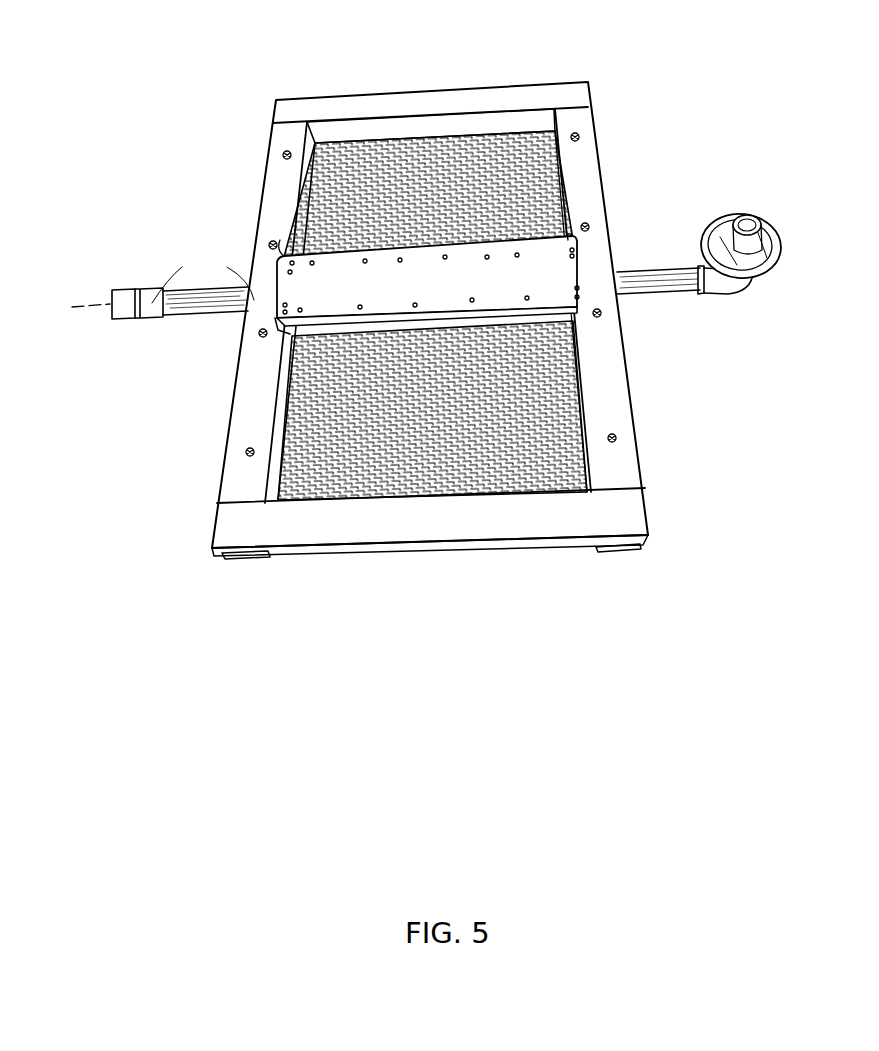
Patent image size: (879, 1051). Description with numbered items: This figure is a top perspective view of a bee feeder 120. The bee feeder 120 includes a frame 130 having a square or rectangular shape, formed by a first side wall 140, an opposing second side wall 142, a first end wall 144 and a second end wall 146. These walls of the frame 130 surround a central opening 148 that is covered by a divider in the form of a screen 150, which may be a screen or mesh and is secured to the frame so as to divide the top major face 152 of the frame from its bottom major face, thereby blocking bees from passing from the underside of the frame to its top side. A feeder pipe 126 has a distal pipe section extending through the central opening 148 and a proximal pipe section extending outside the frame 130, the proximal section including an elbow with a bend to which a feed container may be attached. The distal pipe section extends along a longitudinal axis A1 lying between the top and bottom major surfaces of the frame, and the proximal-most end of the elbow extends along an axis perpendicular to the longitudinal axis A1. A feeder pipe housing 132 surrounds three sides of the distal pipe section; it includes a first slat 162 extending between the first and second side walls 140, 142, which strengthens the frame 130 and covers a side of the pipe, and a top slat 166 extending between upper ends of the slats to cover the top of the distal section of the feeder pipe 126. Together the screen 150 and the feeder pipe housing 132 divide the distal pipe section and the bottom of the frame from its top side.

The bee feeder 120 is at (316, 95).
The frame 130 is at (362, 103).
The first end wall 144 is at (420, 105).
The screen 150 is at (510, 148).
The feeder pipe housing 132 is at (270, 268).
The longitudinal axis A1 is at (163, 285).
The feeder pipe 126 is at (662, 275).
The first slat 162 is at (535, 315).
The top slat 166 is at (340, 298).
The second side wall 142 is at (250, 420).
The first side wall 140 is at (607, 408).
The second end wall 146 is at (420, 523).
The central opening 148 is at (512, 474).
The top major face 152 is at (310, 532).